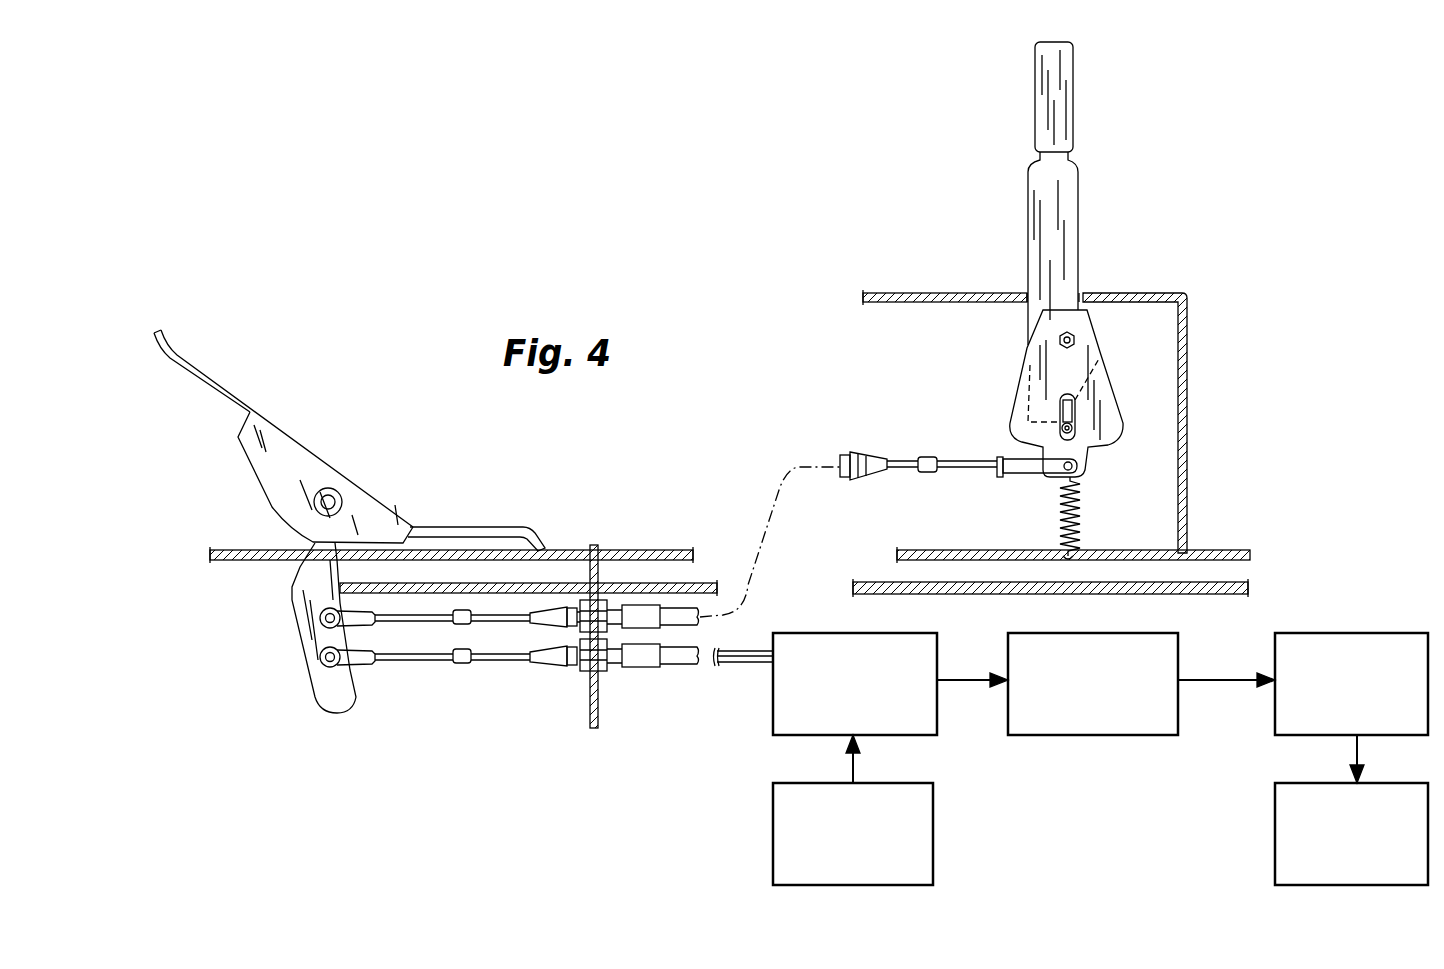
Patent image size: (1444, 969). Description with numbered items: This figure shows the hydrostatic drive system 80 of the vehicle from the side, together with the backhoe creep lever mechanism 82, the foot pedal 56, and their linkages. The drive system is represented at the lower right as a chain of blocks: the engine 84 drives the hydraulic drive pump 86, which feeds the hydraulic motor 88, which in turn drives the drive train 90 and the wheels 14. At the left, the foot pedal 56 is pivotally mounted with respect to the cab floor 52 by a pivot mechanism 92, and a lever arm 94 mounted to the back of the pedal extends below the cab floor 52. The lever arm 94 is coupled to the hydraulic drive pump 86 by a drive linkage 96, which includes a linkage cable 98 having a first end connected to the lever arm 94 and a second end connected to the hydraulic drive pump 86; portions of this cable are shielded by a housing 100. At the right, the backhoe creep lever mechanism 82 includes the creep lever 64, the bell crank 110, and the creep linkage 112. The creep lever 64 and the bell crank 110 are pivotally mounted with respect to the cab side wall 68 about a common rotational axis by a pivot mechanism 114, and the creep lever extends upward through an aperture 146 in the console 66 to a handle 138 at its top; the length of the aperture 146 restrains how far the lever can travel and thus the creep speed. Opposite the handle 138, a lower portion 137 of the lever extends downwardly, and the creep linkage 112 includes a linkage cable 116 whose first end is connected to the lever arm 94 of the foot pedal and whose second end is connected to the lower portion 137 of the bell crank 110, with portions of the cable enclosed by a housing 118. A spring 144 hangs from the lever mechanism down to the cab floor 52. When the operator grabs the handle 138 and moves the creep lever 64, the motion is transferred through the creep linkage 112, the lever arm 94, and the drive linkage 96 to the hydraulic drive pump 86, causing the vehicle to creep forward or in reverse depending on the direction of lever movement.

The wheels 14 is at (1278, 800).
The cab floor 52 is at (250, 563).
The foot pedal 56 is at (316, 456).
The creep lever 64 is at (1079, 194).
The console 66 is at (1157, 293).
The cab side wall 68 is at (918, 336).
The hydrostatic drive system 80 is at (729, 682).
The backhoe creep lever mechanism 82 is at (1100, 284).
The engine 84 is at (798, 783).
The hydraulic drive pump 86 is at (903, 735).
The hydraulic motor 88 is at (1053, 735).
The drive train 90 is at (1297, 735).
The pivot mechanism 92 is at (313, 503).
The lever arm 94 is at (330, 698).
The drive linkage 96 is at (553, 662).
The linkage cable 98 is at (433, 663).
The housing 100 is at (633, 665).
The bell crank 110 is at (1107, 405).
The creep linkage 112 is at (875, 452).
The pivot mechanism 114 is at (1075, 340).
The linkage cable 116 is at (400, 627).
The housing 118 is at (683, 603).
The lower portion 137 is at (1023, 372).
The handle 138 is at (1075, 72).
The spring 144 is at (1083, 503).
The aperture 146 is at (1025, 293).